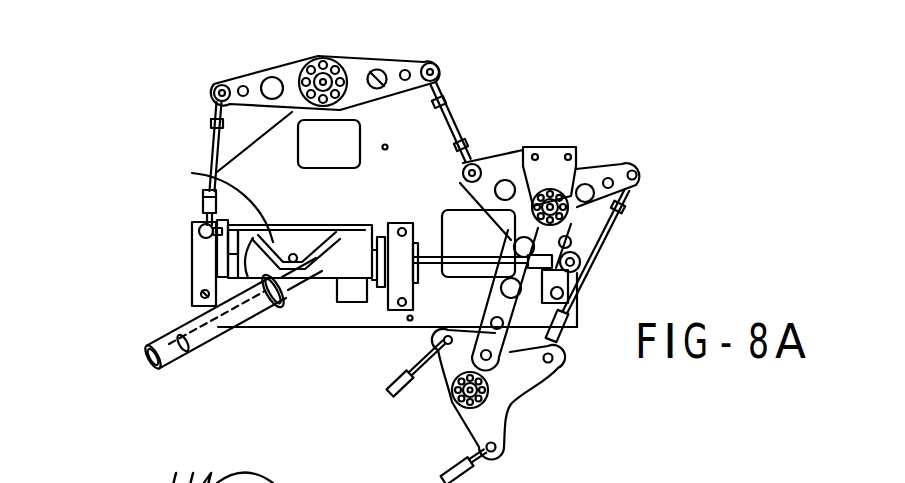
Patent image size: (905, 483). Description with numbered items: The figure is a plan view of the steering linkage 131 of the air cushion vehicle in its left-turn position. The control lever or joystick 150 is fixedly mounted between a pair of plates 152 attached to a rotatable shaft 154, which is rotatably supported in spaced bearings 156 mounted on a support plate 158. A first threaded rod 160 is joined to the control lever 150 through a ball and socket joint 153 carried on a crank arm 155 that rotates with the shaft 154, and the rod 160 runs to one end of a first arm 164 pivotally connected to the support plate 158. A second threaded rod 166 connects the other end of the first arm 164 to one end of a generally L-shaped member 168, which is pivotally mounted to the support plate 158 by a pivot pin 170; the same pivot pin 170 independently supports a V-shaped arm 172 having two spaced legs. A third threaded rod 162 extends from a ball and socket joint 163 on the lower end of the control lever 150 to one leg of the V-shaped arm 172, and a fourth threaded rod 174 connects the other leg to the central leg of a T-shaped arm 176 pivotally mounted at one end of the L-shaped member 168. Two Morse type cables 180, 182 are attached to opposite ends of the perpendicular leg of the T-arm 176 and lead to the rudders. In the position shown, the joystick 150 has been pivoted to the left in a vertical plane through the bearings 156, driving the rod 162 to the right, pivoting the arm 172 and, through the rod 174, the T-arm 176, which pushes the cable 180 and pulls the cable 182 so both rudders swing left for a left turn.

The linkage assembly 131 is at (460, 50).
The control lever 150 is at (191, 357).
The pair of plates 152 is at (107, 157).
The ball and socket joint 153 is at (200, 215).
The rotatable shaft 154 is at (343, 300).
The crank arm 155 is at (200, 242).
The spaced bearings 156 is at (138, 270).
The support plate 158 is at (210, 150).
The first threaded rod 160 is at (250, 150).
The third threaded rod 162 is at (430, 256).
The ball and socket joint 163 is at (340, 238).
The first arm 164 is at (292, 72).
The second threaded rod 166 is at (450, 113).
The L-shaped member 168 is at (485, 165).
The pivot pin 170 is at (590, 162).
The V-shaped arm 172 is at (630, 183).
The fourth threaded rod 174 is at (603, 232).
The T-shaped arm 176 is at (572, 395).
The cable 180 is at (432, 410).
The cable 182 is at (530, 470).